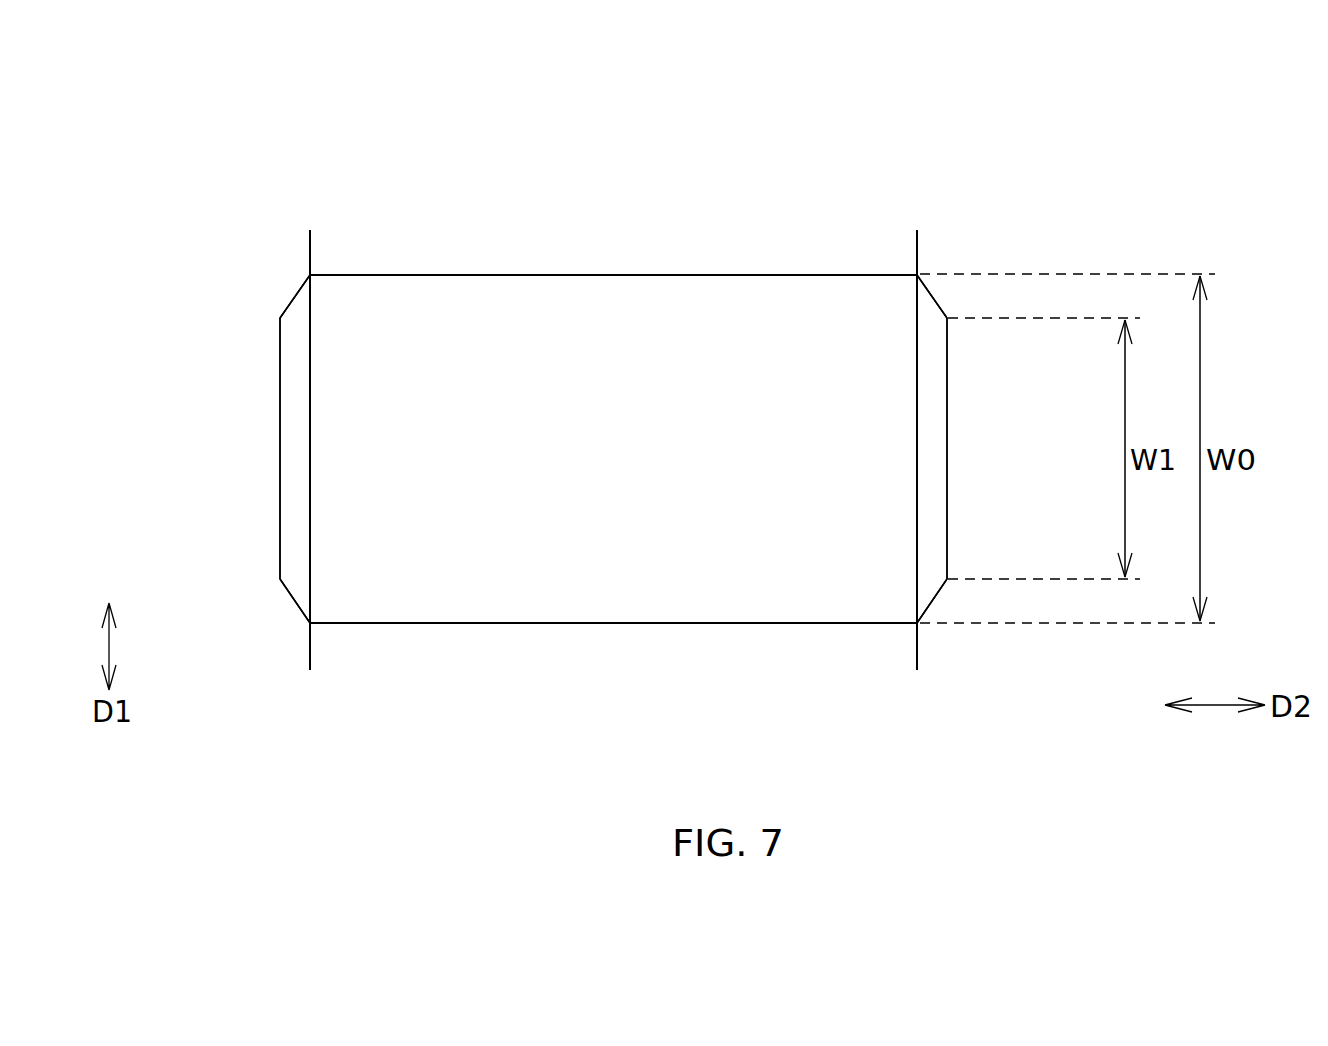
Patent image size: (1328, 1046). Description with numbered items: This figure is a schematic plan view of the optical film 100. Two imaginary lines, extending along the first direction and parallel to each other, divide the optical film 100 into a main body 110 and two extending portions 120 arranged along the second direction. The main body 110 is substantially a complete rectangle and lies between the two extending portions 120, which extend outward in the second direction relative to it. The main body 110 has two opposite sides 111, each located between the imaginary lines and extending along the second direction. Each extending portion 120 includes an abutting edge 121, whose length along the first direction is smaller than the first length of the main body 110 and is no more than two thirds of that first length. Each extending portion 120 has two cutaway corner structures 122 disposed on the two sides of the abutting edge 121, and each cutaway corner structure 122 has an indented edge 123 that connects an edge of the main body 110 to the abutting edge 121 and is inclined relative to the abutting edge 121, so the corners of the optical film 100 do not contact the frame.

The optical film 100 is at (1130, 163).
The main body 110 is at (646, 466).
The sides 111 is at (615, 274).
The extending portion 120 is at (297, 465).
The abutting edge 121 is at (280, 415).
The cutaway corner structure 122 is at (300, 272).
The indented edge 123 is at (295, 293).